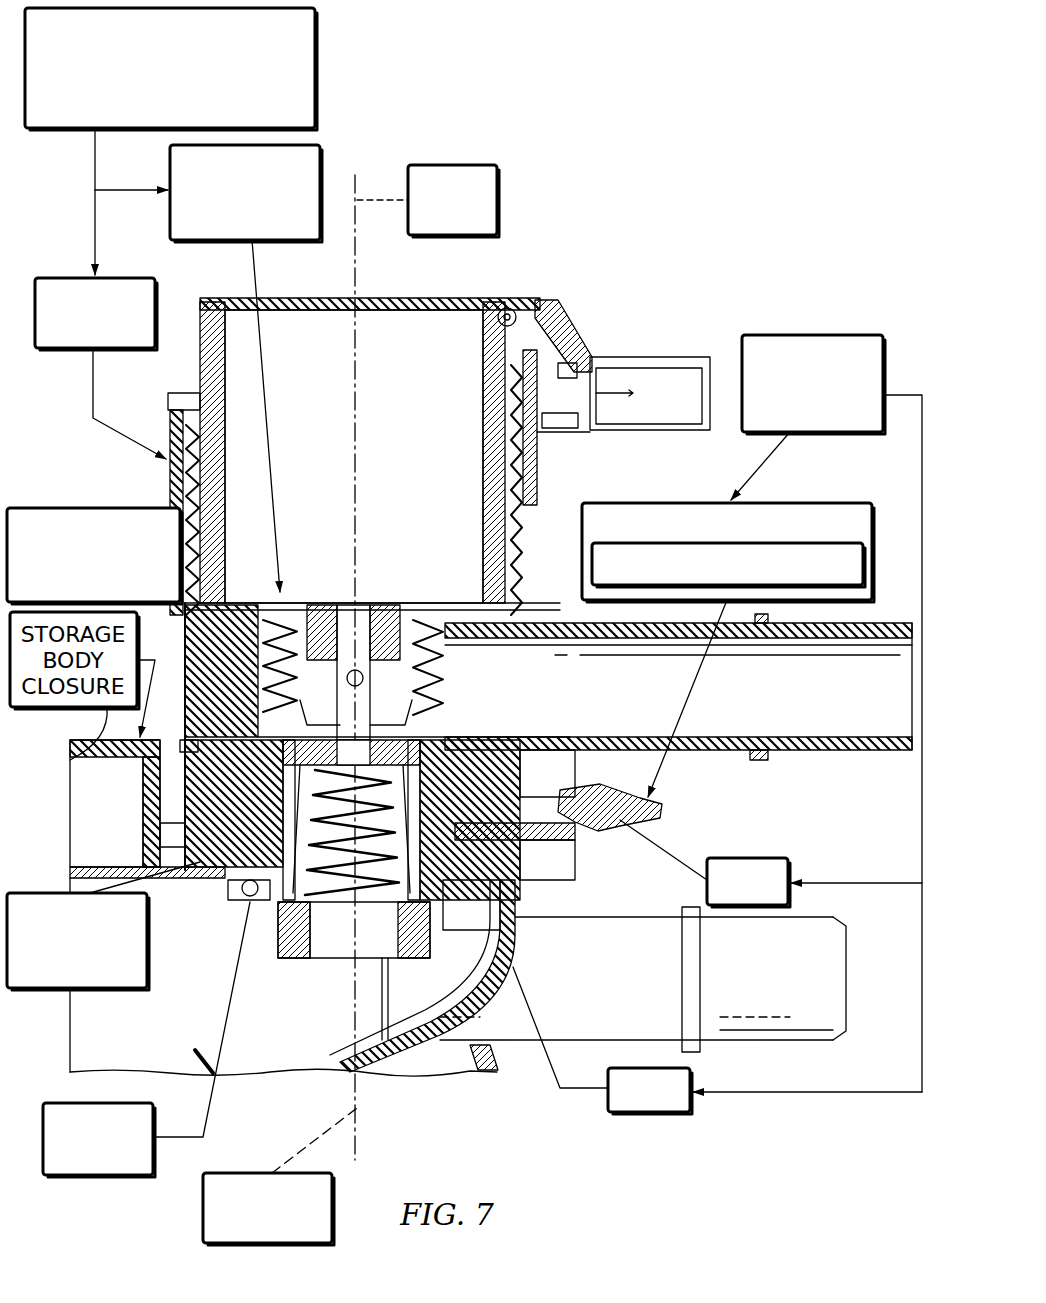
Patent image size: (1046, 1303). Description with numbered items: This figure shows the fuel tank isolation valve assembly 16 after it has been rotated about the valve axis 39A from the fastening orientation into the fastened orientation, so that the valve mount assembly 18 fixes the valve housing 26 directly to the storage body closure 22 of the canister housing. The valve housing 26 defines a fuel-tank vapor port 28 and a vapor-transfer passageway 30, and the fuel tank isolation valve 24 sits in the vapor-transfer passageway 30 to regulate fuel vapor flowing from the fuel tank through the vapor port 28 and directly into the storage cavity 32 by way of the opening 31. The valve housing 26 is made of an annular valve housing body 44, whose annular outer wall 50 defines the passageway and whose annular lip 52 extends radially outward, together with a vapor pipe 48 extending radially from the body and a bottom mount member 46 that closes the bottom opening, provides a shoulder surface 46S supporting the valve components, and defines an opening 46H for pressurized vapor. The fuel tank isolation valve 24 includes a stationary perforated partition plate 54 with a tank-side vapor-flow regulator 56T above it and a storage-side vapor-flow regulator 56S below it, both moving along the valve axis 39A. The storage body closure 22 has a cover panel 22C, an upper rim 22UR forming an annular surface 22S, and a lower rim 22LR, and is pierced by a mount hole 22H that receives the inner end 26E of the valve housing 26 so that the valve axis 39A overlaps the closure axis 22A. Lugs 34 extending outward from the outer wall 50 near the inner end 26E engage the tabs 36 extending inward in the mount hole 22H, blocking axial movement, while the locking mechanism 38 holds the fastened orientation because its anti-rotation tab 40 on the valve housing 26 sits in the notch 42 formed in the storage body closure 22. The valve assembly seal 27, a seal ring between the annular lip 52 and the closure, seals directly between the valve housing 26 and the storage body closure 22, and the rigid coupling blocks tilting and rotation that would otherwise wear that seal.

The fuel tank isolation valve assembly 16 is at (318, 72).
The fuel tank isolation valve 24 is at (320, 178).
The valve axis 39A is at (452, 165).
The valve mount assembly 18 is at (812, 335).
The valve housing 26 is at (75, 350).
The vapor-transfer passageway 30 is at (55, 508).
The locking mechanism 38 is at (690, 503).
The anti-rotation tab 40 is at (872, 560).
The tank-side vapor-flow regulator 56T is at (520, 615).
The perforated partition plate 54 is at (450, 683).
The valve housing body 44 is at (184, 622).
The annular outer wall 50 is at (182, 748).
The upper rim 22UR is at (197, 805).
The cover panel 22C is at (68, 745).
The annular lip 52 is at (180, 803).
The storage body closure 22 is at (70, 760).
The annular surface 22S is at (232, 845).
The storage-side vapor-flow regulator 56S is at (265, 884).
The lower rim 22LR is at (214, 925).
The valve assembly seal 27 is at (62, 990).
The storage cavity 32 is at (101, 1040).
The shoulder surface 46S is at (249, 905).
The bottom mount member 46 is at (383, 1043).
The opening 46H is at (338, 962).
The mount hole 22H is at (98, 1175).
The closure axis 22A is at (202, 1205).
The opening 31 is at (412, 935).
The inner end 26E is at (480, 1008).
The lugs 34 is at (649, 1112).
The tabs 36 is at (747, 858).
The vapor pipe 48 is at (810, 757).
The fuel-tank vapor port 28 is at (870, 696).
The notch 42 is at (560, 800).